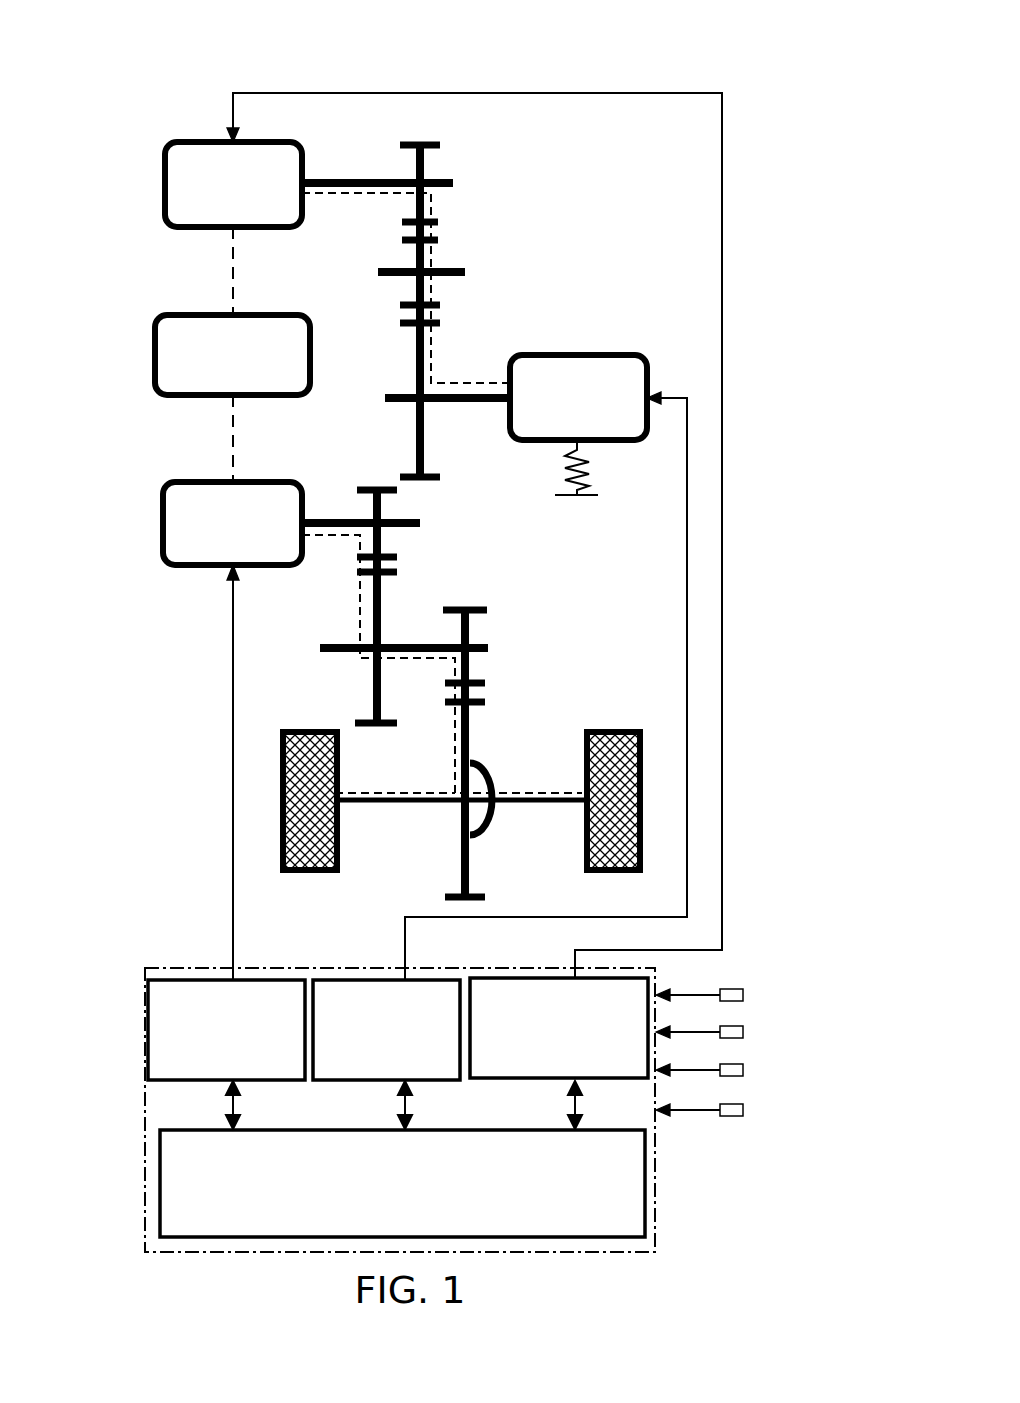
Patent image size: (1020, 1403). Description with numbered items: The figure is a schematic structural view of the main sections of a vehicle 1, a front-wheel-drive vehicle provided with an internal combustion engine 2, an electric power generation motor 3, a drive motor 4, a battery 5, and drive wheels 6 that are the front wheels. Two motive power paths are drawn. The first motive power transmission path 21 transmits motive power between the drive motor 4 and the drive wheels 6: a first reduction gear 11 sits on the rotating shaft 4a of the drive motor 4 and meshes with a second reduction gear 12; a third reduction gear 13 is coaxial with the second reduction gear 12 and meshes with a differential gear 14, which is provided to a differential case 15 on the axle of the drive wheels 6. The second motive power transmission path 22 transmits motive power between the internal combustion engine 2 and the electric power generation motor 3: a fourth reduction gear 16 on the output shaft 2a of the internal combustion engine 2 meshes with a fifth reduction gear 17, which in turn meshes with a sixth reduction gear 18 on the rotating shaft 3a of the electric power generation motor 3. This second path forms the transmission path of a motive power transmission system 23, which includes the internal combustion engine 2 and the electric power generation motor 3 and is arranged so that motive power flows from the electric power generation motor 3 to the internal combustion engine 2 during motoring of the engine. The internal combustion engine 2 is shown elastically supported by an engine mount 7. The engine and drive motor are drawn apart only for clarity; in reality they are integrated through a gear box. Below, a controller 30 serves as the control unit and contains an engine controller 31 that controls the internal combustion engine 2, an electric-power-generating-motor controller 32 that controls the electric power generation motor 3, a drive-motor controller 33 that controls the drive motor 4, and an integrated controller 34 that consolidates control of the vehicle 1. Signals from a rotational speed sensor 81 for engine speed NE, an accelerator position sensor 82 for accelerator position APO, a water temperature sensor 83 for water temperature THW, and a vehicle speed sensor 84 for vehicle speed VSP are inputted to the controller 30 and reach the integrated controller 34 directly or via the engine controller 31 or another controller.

The vehicle 1 is at (118, 58).
The internal combustion engine 2 is at (600, 355).
The output shaft 2a is at (440, 405).
The electric power generation motor 3 is at (200, 142).
The rotating shaft 3a is at (360, 180).
The drive motor 4 is at (215, 568).
The rotating shaft 4a is at (320, 518).
The battery 5 is at (208, 315).
The drive wheels 6 is at (305, 732).
The engine mount 7 is at (590, 466).
The first reduction gear 11 is at (392, 540).
The second reduction gear 12 is at (403, 605).
The third reduction gear 13 is at (470, 622).
The differential gear 14 is at (468, 740).
The differential case 15 is at (490, 775).
The fourth reduction gear 16 is at (410, 421).
The fifth reduction gear 17 is at (408, 283).
The sixth reduction gear 18 is at (428, 151).
The first motive power transmission path 21 is at (450, 760).
The second motive power transmission path 22 is at (434, 241).
The motive power transmission system 23 is at (528, 198).
The controller 30 is at (160, 968).
The engine controller 31 is at (370, 980).
The electric-power-generating-motor controller 32 is at (540, 978).
The drive-motor controller 33 is at (197, 980).
The integrated controller 34 is at (657, 1178).
The rotational speed sensor 81 is at (743, 995).
The accelerator position sensor 82 is at (743, 1032).
The water temperature sensor 83 is at (743, 1070).
The vehicle speed sensor 84 is at (743, 1110).